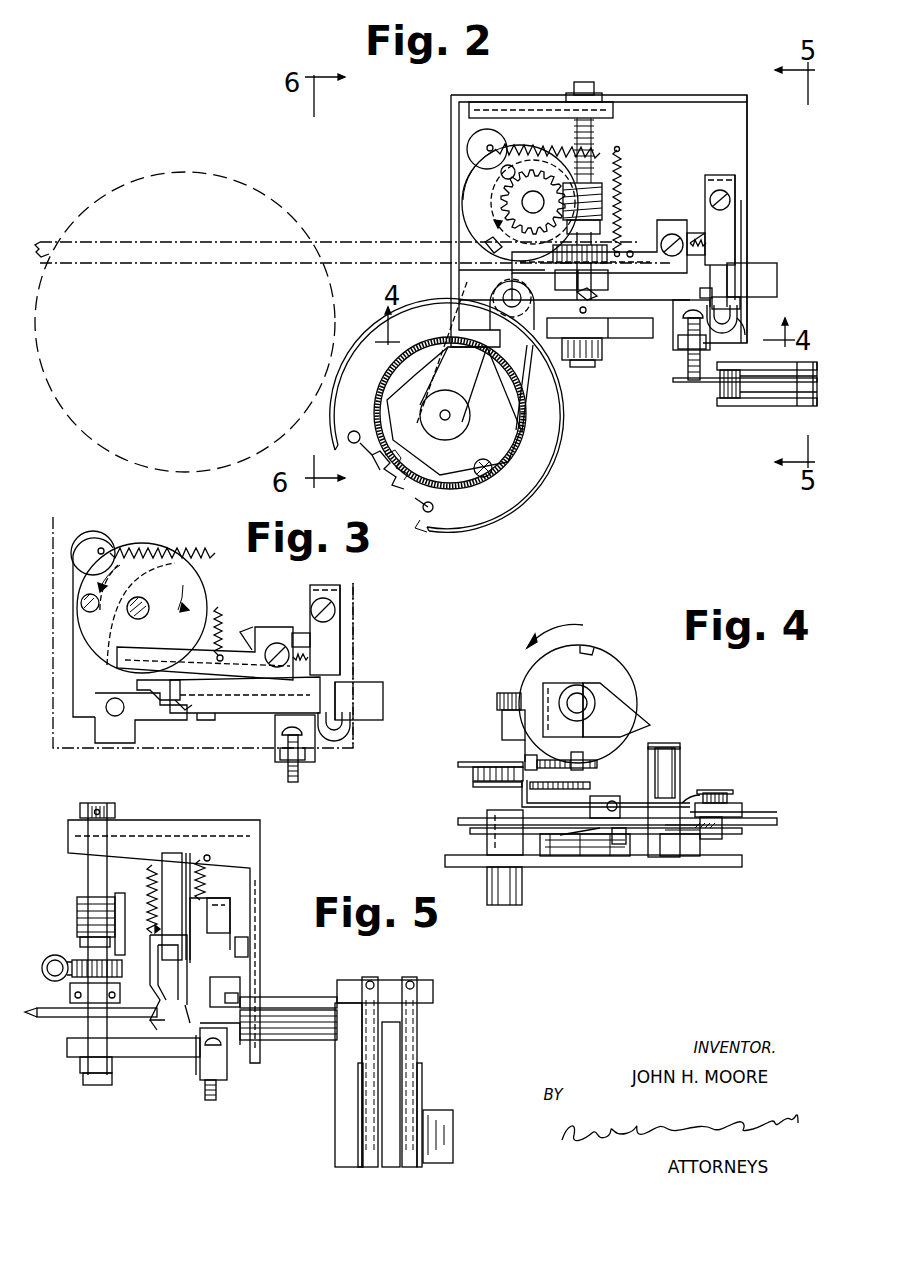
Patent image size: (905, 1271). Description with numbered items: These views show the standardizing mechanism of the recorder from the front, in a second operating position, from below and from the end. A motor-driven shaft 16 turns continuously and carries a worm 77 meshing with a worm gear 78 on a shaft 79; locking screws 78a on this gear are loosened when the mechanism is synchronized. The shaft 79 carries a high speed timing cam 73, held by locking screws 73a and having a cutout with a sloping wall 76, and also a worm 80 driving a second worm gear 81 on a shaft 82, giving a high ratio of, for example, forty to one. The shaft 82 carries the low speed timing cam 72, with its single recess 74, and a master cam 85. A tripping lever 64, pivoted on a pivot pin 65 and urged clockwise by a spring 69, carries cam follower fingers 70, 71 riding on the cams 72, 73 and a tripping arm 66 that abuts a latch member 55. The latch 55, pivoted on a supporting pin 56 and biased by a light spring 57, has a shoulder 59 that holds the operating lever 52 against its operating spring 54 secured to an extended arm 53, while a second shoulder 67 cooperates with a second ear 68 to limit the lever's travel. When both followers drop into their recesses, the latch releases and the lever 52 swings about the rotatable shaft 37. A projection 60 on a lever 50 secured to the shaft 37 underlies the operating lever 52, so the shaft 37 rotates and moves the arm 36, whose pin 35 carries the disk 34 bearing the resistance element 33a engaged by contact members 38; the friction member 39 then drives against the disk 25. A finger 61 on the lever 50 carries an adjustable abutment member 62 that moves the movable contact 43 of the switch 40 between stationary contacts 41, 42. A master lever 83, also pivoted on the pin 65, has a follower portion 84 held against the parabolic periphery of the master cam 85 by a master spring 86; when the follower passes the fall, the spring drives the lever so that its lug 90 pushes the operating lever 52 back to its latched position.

In FIG. 2, the motor-driven shaft 16 is at (333, 240).
In FIG. 5, the motor-driven shaft 16 is at (52, 968).
In FIG. 2, the disk 25 is at (282, 200).
In FIG. 2, the resistance element 33a is at (522, 448).
In FIG. 2, the disk 34 is at (497, 502).
In FIG. 5, the disk 34 is at (417, 1072).
In FIG. 2, the pin 35 is at (447, 432).
In FIG. 2, the arm 36 is at (487, 378).
In FIG. 5, the arm 36 is at (345, 1073).
In FIG. 2, the rotatable shaft 37 is at (503, 302).
In FIG. 4, the rotatable shaft 37 is at (510, 906).
In FIG. 2, the contact members 38 is at (540, 398).
In FIG. 5, the contact members 38 is at (417, 1115).
In FIG. 2, the friction member 39 is at (538, 486).
In FIG. 5, the friction member 39 is at (390, 1063).
In FIG. 2, the switch 40 is at (733, 438).
In FIG. 2, the stationary contact 41 is at (755, 362).
In FIG. 2, the stationary contact 42 is at (750, 406).
In FIG. 2, the movable contact 43 is at (683, 384).
In FIG. 2, the lever 50 is at (730, 297).
In FIG. 3, the lever 50 is at (383, 700).
In FIG. 4, the lever 50 is at (772, 826).
In FIG. 5, the lever 50 is at (242, 985).
In FIG. 2, the operating lever 52 is at (737, 268).
In FIG. 3, the operating lever 52 is at (350, 690).
In FIG. 4, the operating lever 52 is at (585, 845).
In FIG. 5, the operating lever 52 is at (240, 1000).
In FIG. 2, the extended arm 53 is at (470, 153).
In FIG. 3, the extended arm 53 is at (80, 550).
In FIG. 5, the extended arm 53 is at (207, 870).
In FIG. 2, the operating spring 54 is at (594, 166).
In FIG. 3, the operating spring 54 is at (185, 560).
In FIG. 2, the latch member 55 is at (730, 224).
In FIG. 3, the latch member 55 is at (335, 632).
In FIG. 4, the latch member 55 is at (750, 810).
In FIG. 5, the latch member 55 is at (230, 897).
In FIG. 2, the supporting pin 56 is at (727, 188).
In FIG. 3, the supporting pin 56 is at (333, 610).
In FIG. 4, the supporting pin 56 is at (723, 796).
In FIG. 5, the supporting pin 56 is at (222, 915).
In FIG. 2, the light spring 57 is at (703, 236).
In FIG. 3, the light spring 57 is at (310, 657).
In FIG. 2, the shoulder 59 is at (698, 290).
In FIG. 3, the shoulder 59 is at (315, 716).
In FIG. 4, the shoulder 59 is at (715, 793).
In FIG. 2, the projection 60 is at (741, 280).
In FIG. 4, the projection 60 is at (715, 840).
In FIG. 5, the projection 60 is at (240, 1025).
In FIG. 2, the finger 61 is at (676, 332).
In FIG. 3, the finger 61 is at (278, 728).
In FIG. 4, the finger 61 is at (688, 856).
In FIG. 5, the finger 61 is at (225, 1068).
In FIG. 2, the abutment member 62 is at (688, 365).
In FIG. 3, the abutment member 62 is at (300, 776).
In FIG. 5, the abutment member 62 is at (205, 1095).
In FIG. 2, the tripping lever 64 is at (630, 250).
In FIG. 3, the tripping lever 64 is at (225, 655).
In FIG. 4, the tripping lever 64 is at (637, 757).
In FIG. 5, the tripping lever 64 is at (150, 940).
In FIG. 2, the pivot pin 65 is at (680, 255).
In FIG. 3, the pivot pin 65 is at (270, 668).
In FIG. 4, the pivot pin 65 is at (675, 775).
In FIG. 5, the pivot pin 65 is at (188, 1000).
In FIG. 2, the tripping arm 66 is at (692, 236).
In FIG. 3, the tripping arm 66 is at (302, 640).
In FIG. 4, the tripping arm 66 is at (693, 790).
In FIG. 2, the second shoulder 67 is at (742, 318).
In FIG. 2, the second ear 68 is at (738, 302).
In FIG. 3, the second ear 68 is at (350, 720).
In FIG. 4, the second ear 68 is at (738, 805).
In FIG. 5, the second ear 68 is at (186, 1030).
In FIG. 2, the spring 69 is at (622, 170).
In FIG. 3, the spring 69 is at (222, 607).
In FIG. 4, the spring 69 is at (650, 748).
In FIG. 5, the spring 69 is at (150, 875).
In FIG. 3, the cam follower finger 70 is at (137, 677).
In FIG. 4, the cam follower finger 70 is at (530, 762).
In FIG. 5, the cam follower finger 70 is at (153, 990).
In FIG. 3, the cam follower finger 71 is at (185, 712).
In FIG. 4, the cam follower finger 71 is at (583, 755).
In FIG. 5, the cam follower finger 71 is at (150, 1030).
In FIG. 2, the timing cam 72 is at (465, 215).
In FIG. 3, the timing cam 72 is at (185, 583).
In FIG. 4, the timing cam 72 is at (465, 764).
In FIG. 5, the timing cam 72 is at (165, 870).
In FIG. 2, the timing cam 73 is at (606, 310).
In FIG. 4, the timing cam 73 is at (636, 673).
In FIG. 5, the timing cam 73 is at (62, 1040).
In FIG. 5, the locking screws 73a is at (90, 1040).
In FIG. 2, the recess 74 is at (484, 247).
In FIG. 2, the sloping wall 76 is at (598, 295).
In FIG. 4, the sloping wall 76 is at (592, 652).
In FIG. 5, the sloping wall 76 is at (38, 1012).
In FIG. 5, the worm 77 is at (55, 957).
In FIG. 5, the worm gear 78 is at (80, 962).
In FIG. 5, the locking screws 78a is at (70, 995).
In FIG. 2, the shaft 79 is at (620, 153).
In FIG. 4, the shaft 79 is at (586, 697).
In FIG. 5, the shaft 79 is at (88, 867).
In FIG. 2, the worm 80 is at (603, 195).
In FIG. 5, the worm 80 is at (78, 905).
In FIG. 2, the second worm gear 81 is at (528, 168).
In FIG. 4, the second worm gear 81 is at (500, 703).
In FIG. 2, the shaft 82 is at (522, 202).
In FIG. 3, the shaft 82 is at (150, 604).
In FIG. 4, the shaft 82 is at (522, 740).
In FIG. 5, the shaft 82 is at (126, 915).
In FIG. 2, the master lever 83 is at (645, 285).
In FIG. 3, the master lever 83 is at (258, 630).
In FIG. 4, the master lever 83 is at (620, 810).
In FIG. 5, the master lever 83 is at (248, 940).
In FIG. 2, the follower portion 84 is at (488, 270).
In FIG. 3, the follower portion 84 is at (158, 691).
In FIG. 4, the follower portion 84 is at (522, 795).
In FIG. 5, the follower portion 84 is at (228, 999).
In FIG. 2, the master cam 85 is at (497, 177).
In FIG. 4, the master cam 85 is at (473, 784).
In FIG. 5, the master cam 85 is at (188, 878).
In FIG. 4, the master spring 86 is at (616, 800).
In FIG. 5, the master spring 86 is at (212, 884).
In FIG. 3, the lug 90 is at (207, 720).
In FIG. 4, the lug 90 is at (600, 838).